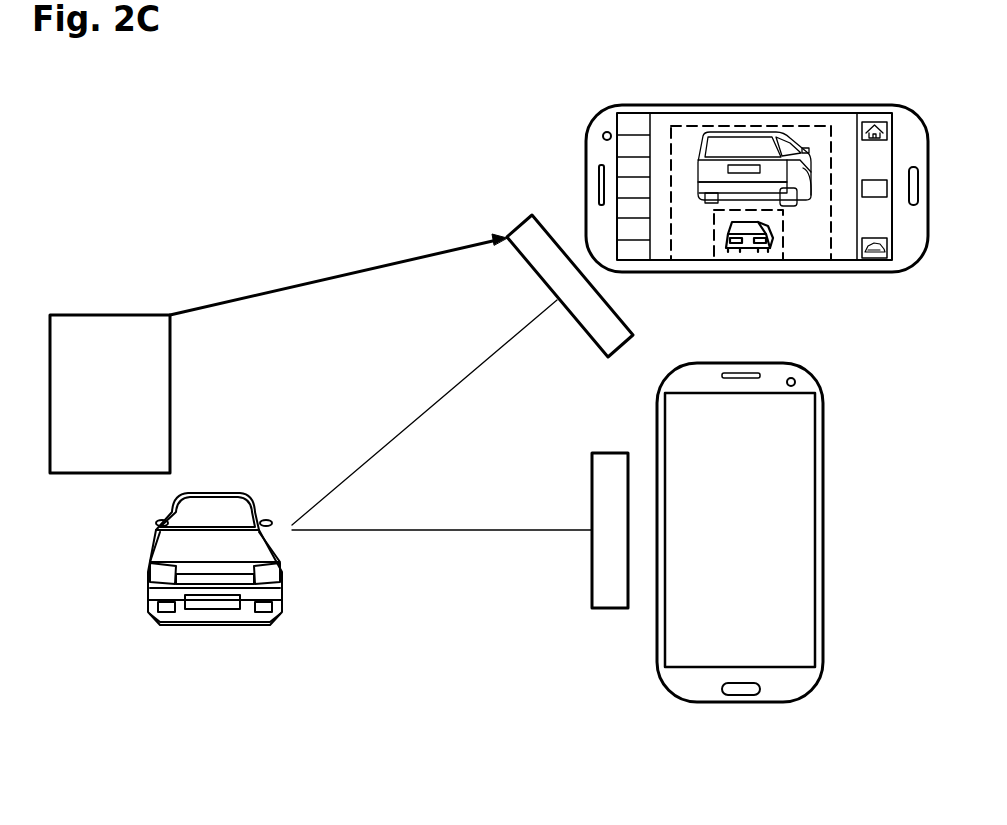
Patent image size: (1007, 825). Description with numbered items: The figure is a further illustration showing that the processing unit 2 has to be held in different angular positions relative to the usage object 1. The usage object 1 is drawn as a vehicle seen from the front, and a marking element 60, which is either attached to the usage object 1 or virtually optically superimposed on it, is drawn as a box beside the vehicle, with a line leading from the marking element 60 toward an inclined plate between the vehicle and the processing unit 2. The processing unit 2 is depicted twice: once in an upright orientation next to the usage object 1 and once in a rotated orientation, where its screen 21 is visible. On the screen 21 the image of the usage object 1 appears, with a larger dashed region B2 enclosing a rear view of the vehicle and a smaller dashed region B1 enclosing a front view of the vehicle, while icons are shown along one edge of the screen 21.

The usage object 1 is at (213, 625).
The processing unit 2 is at (764, 377).
The screen 21 is at (842, 138).
The marking elements 60 is at (122, 315).
The region B1 is at (715, 242).
The region B2 is at (690, 125).